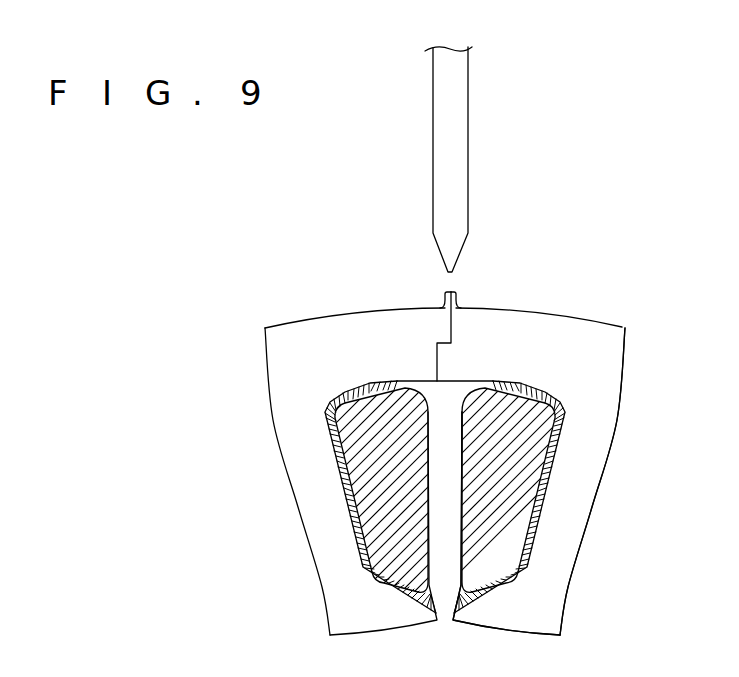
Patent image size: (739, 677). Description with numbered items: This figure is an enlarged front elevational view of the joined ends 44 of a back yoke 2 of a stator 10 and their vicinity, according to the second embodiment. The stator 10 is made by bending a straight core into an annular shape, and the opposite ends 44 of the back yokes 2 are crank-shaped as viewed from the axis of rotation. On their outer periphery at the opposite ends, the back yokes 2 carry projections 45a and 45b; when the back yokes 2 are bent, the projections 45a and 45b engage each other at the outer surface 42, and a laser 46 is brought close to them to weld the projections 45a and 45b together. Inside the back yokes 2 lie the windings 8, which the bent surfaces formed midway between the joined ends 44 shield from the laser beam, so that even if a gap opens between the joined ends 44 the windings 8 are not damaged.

The back yoke 2 is at (330, 345).
The windings 8 is at (372, 502).
The stator 10 is at (582, 297).
The outer circumferential surface 42 is at (523, 308).
The joined ends 44 is at (450, 328).
The projection 45a is at (462, 298).
The projection 45b is at (440, 298).
The laser 46 is at (453, 137).